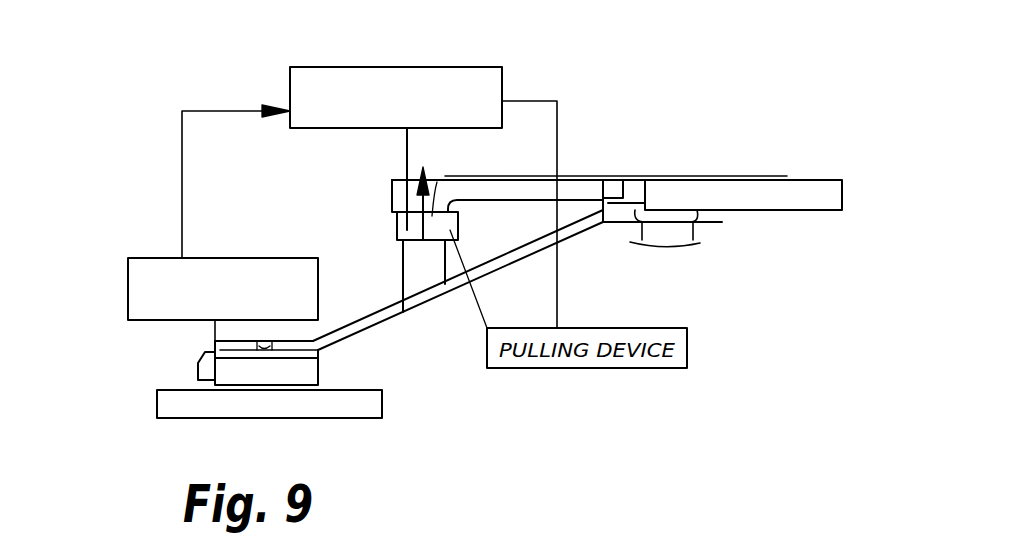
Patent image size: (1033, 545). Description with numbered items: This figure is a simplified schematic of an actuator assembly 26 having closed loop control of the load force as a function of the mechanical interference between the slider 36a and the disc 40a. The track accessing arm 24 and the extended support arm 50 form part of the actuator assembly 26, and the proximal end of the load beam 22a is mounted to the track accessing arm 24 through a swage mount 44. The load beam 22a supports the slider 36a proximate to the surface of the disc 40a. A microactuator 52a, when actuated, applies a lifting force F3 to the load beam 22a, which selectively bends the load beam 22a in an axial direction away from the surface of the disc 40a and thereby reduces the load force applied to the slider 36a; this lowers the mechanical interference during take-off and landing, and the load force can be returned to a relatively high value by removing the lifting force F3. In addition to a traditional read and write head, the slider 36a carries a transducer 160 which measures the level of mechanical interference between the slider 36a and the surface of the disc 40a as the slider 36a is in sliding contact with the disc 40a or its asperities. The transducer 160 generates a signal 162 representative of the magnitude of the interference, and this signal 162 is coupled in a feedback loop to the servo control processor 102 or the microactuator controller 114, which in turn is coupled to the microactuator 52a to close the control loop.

The servo control processor 102 is at (396, 75).
The microactuator controller 114 is at (355, 67).
The signal 162 is at (128, 272).
The lifting force F3 is at (431, 180).
The actuator assembly 26 is at (561, 151).
The microactuator 52a is at (360, 203).
The extended support arm 50 is at (573, 178).
The track accessing arm 24 is at (808, 176).
The swage mount 44 is at (730, 248).
The load beam 22a is at (400, 320).
The slider 36a is at (320, 368).
The transducer 160 is at (182, 365).
The disc 40a is at (382, 400).